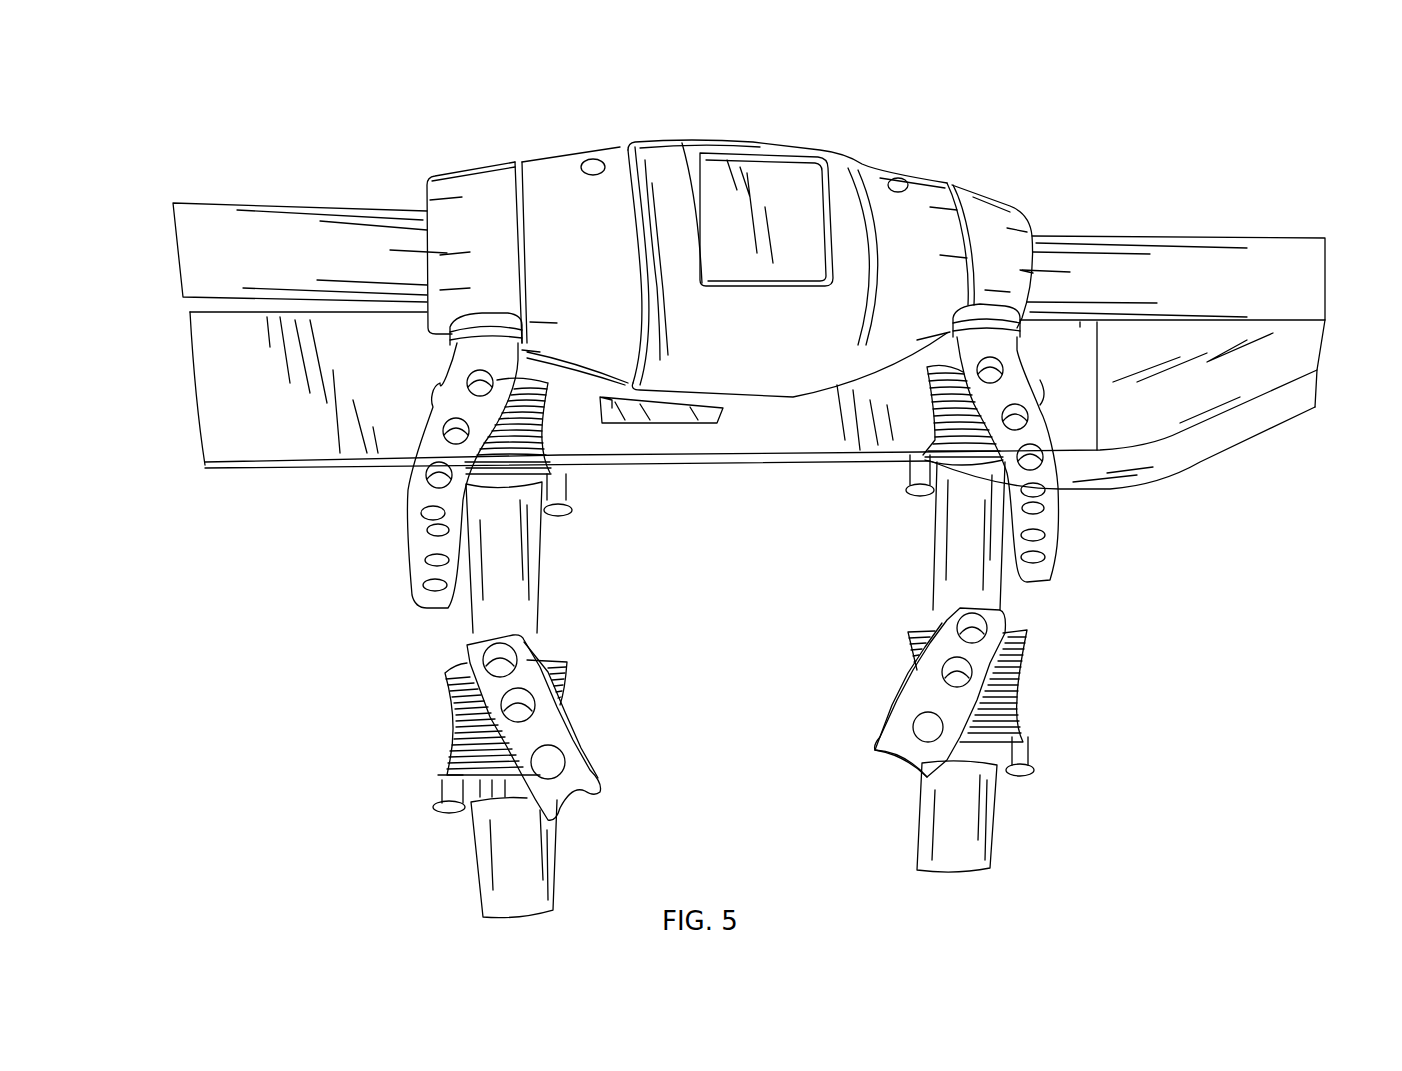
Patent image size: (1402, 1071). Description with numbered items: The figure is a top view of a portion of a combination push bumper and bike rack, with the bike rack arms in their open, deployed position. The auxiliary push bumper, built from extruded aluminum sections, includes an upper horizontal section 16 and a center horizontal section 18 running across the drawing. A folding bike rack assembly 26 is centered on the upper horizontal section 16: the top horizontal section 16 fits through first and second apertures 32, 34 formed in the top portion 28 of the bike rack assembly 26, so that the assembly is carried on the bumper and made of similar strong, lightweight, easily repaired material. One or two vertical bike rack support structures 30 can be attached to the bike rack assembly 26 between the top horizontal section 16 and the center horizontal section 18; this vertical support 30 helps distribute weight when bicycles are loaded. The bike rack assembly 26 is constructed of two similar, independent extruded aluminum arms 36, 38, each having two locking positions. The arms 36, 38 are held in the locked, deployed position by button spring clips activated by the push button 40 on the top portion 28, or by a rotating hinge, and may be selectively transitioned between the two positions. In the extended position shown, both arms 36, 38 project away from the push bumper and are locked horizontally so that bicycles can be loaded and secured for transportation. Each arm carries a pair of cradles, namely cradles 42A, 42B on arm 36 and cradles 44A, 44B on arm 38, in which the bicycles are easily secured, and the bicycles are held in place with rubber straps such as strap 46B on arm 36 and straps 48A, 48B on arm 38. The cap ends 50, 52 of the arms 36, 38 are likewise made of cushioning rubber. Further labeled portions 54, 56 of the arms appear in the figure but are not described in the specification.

The upper horizontal section 16 is at (1312, 274).
The center horizontal section 18 is at (217, 402).
The folding bike rack assembly 26 is at (966, 128).
The top portion 28 is at (798, 373).
The vertical bike rack support structure 30 is at (693, 415).
The first aperture 32 is at (426, 204).
The right end cap 34 is at (1033, 232).
The arm 36 is at (570, 633).
The arm 38 is at (1068, 651).
The push button 40 is at (772, 217).
The cradle 42A is at (555, 462).
The cradle 42B is at (462, 722).
The cradle 44A is at (925, 425).
The cradle 44B is at (1012, 710).
The rubber strap 46B is at (553, 762).
The rubber strap 48A is at (1050, 520).
The rubber strap 48B is at (915, 705).
The cap end 50 is at (521, 912).
The cap end 52 is at (955, 872).
The first upper rod 54 is at (527, 555).
The second upper rod 56 is at (941, 535).